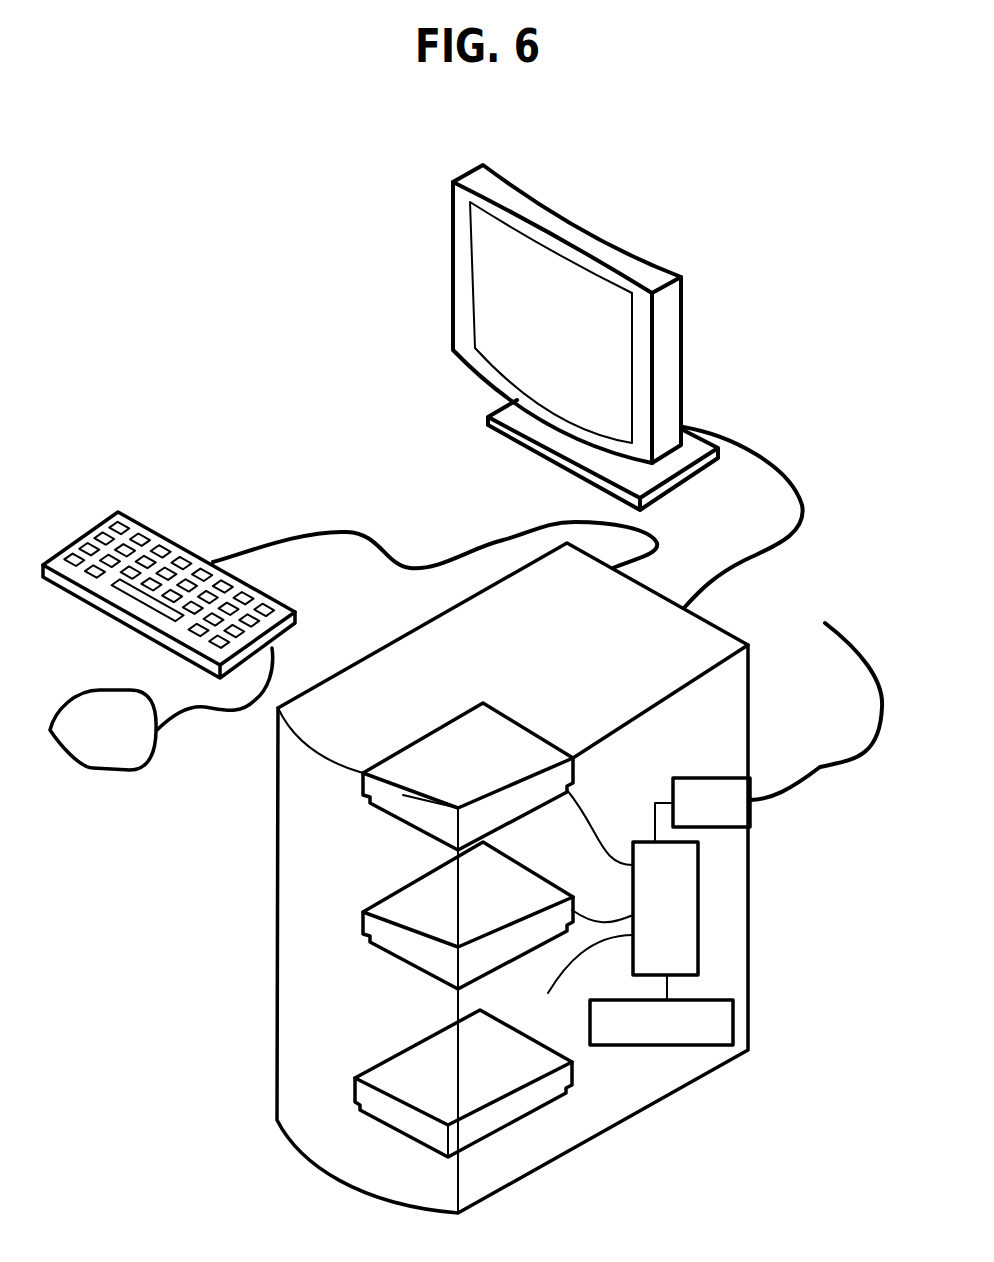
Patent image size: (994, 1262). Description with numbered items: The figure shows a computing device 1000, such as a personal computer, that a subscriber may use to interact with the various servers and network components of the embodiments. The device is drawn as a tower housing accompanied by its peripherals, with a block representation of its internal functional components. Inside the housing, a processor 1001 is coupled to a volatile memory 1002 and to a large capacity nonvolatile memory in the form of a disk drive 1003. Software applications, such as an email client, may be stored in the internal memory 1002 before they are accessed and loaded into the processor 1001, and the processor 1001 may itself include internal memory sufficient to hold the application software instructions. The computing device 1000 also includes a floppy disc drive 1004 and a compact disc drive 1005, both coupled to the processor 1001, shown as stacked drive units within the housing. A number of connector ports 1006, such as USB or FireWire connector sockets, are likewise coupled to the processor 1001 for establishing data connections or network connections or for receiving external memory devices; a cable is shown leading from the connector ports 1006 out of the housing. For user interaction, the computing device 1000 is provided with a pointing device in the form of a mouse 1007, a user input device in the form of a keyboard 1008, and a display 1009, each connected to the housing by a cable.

The computing device 1000 is at (750, 667).
The processor 1001 is at (691, 921).
The volatile memory 1002 is at (688, 1035).
The disk drive 1003 is at (573, 1072).
The floppy disc drive 1004 is at (574, 768).
The compact disc (CD) drive 1005 is at (520, 955).
The connector ports 1006 is at (738, 814).
The mouse 1007 is at (102, 770).
The keyboard 1008 is at (298, 613).
The display 1009 is at (681, 352).